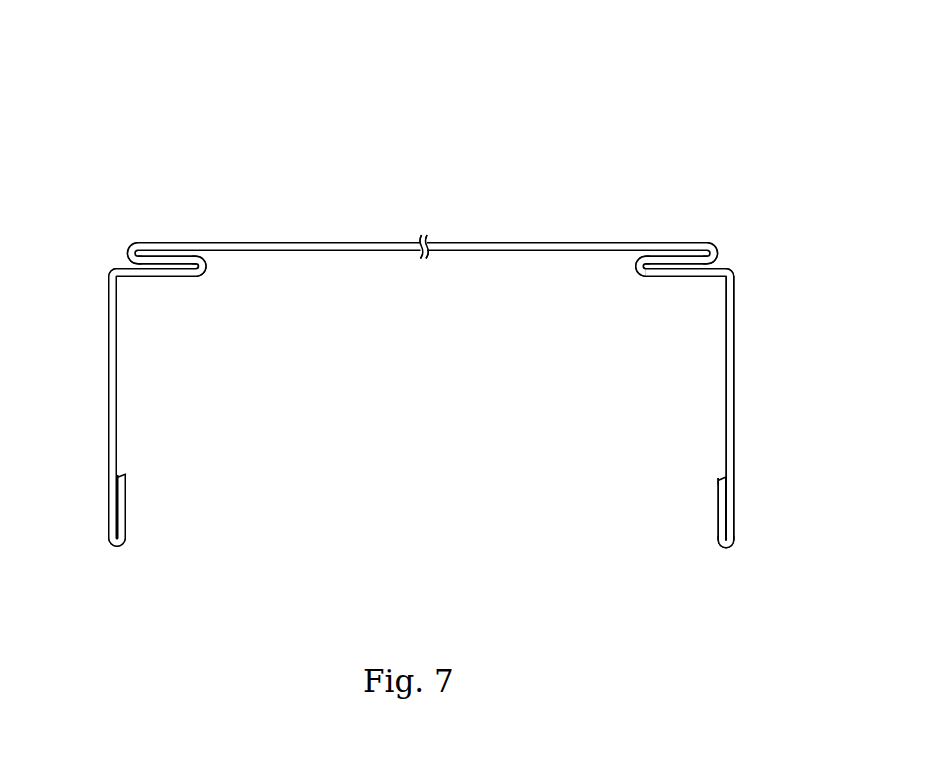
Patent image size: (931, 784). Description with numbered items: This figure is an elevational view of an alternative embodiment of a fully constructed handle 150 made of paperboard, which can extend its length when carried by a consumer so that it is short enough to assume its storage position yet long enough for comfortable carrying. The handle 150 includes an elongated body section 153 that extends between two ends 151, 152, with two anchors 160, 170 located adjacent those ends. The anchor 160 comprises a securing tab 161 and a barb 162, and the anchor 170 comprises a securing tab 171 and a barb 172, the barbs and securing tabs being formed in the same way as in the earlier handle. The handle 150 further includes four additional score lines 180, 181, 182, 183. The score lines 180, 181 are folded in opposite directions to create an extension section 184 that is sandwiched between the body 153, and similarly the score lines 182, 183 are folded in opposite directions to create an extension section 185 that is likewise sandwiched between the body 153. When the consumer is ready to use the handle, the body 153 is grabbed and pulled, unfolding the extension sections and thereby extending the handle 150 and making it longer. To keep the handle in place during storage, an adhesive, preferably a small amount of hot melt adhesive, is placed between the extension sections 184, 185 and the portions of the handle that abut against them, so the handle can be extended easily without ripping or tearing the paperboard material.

The handle 150 is at (474, 214).
The elongated body section 153 is at (255, 243).
The score line 181 is at (128, 250).
The extension section 184 is at (162, 259).
The score line 180 is at (207, 269).
The score line 183 is at (718, 252).
The extension section 185 is at (665, 263).
The score line 182 is at (637, 267).
The end 151 is at (108, 498).
The end 152 is at (735, 497).
The anchor 160 is at (128, 495).
The securing tab 161 is at (126, 515).
The barb 162 is at (128, 478).
The anchor 170 is at (718, 498).
The securing tab 171 is at (718, 515).
The barb 172 is at (717, 480).